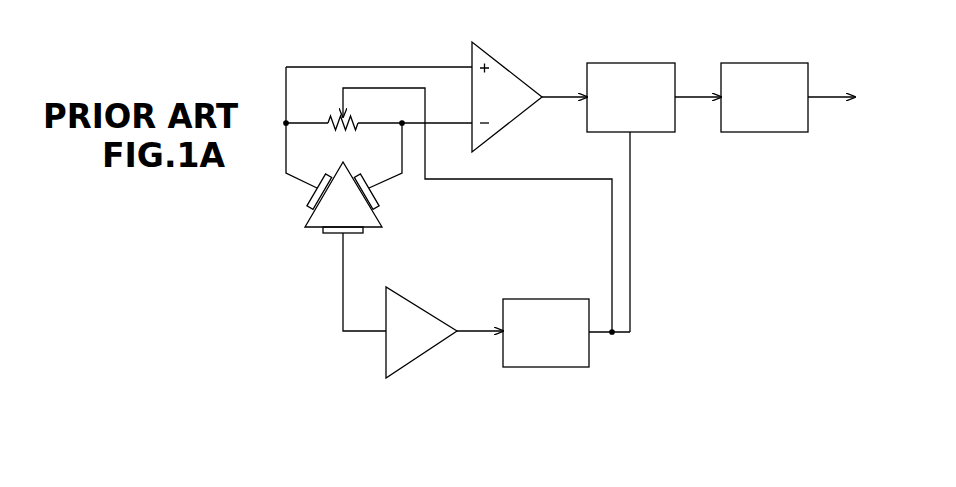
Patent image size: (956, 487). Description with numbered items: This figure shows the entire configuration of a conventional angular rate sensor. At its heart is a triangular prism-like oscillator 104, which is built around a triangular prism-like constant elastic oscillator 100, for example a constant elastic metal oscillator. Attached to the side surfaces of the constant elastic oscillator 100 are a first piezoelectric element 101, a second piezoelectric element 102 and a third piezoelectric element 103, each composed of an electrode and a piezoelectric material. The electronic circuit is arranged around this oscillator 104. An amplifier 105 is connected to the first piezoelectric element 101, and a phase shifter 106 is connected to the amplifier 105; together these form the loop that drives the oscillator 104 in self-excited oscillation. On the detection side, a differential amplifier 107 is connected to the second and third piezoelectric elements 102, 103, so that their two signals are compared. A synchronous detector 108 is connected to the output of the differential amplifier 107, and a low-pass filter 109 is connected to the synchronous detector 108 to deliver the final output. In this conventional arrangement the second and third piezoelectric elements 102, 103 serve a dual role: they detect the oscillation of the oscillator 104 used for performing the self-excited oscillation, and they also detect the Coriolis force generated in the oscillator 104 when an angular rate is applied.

The constant elastic oscillator 100 is at (375, 222).
The first piezoelectric element 101 is at (352, 235).
The second piezoelectric element 102 is at (307, 206).
The third piezoelectric element 103 is at (378, 206).
The oscillator 104 is at (290, 285).
The amplifier 105 is at (434, 313).
The phase shifter 106 is at (535, 299).
The differential amplifier 107 is at (511, 70).
The synchronous detector 108 is at (623, 63).
The low-pass filter 109 is at (752, 63).